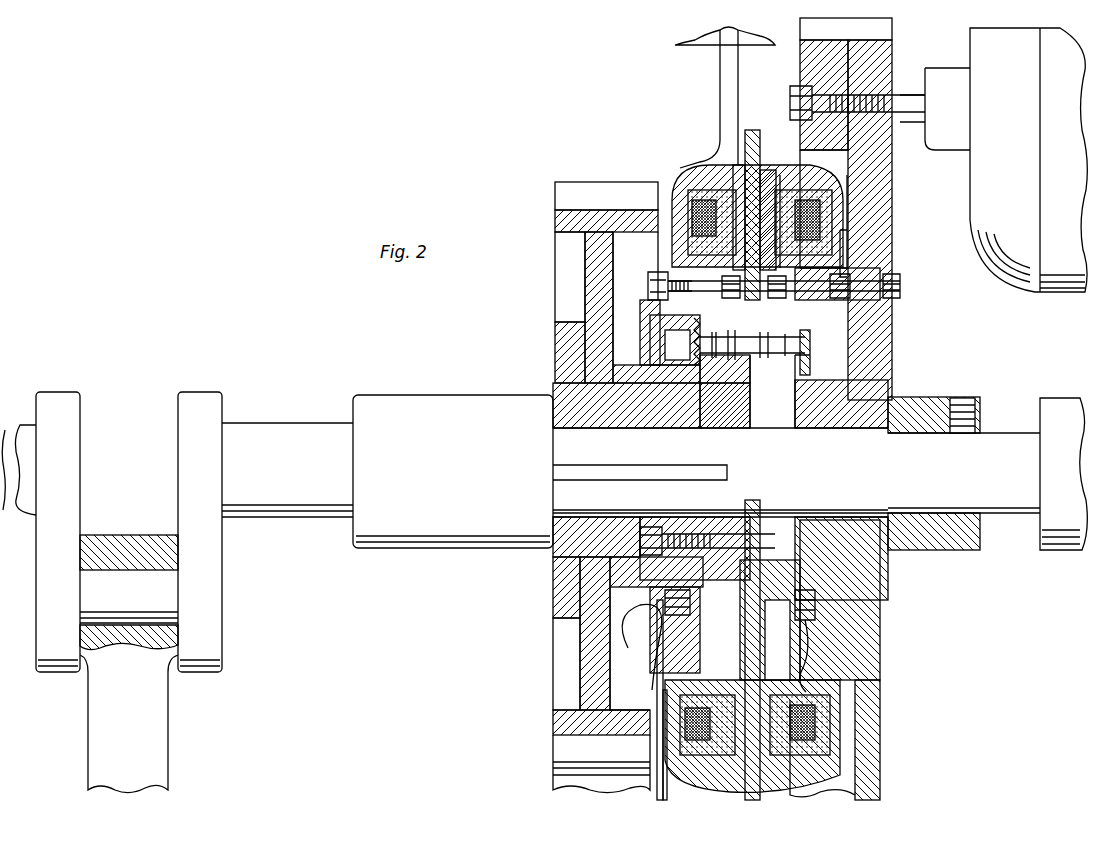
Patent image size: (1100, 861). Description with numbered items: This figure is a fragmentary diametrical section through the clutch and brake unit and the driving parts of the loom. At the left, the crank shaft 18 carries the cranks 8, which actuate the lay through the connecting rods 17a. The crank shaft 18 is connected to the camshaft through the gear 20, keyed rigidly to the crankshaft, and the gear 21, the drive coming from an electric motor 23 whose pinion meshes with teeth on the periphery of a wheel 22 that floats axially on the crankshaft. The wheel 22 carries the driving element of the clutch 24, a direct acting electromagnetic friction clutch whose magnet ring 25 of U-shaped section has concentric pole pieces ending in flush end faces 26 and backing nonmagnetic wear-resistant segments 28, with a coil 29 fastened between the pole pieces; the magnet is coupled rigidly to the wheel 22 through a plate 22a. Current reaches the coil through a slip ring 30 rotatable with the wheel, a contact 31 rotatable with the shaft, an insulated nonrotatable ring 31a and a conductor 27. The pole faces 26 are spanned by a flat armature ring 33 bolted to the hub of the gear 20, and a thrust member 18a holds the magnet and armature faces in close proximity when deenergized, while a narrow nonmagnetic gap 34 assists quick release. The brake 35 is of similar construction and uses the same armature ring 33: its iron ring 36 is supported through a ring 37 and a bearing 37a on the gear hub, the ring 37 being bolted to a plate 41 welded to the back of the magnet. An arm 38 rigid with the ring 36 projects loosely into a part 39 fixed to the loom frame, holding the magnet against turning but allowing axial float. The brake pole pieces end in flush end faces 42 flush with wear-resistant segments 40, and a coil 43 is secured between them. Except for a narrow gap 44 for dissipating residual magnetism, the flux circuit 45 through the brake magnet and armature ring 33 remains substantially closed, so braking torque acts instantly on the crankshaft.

The cranks 8 is at (215, 603).
The connecting rods 17a is at (168, 748).
The crank shaft 18 is at (300, 438).
The thrust member 18a is at (975, 405).
The gear 20 is at (565, 185).
The gear 21 is at (553, 778).
The wheel 22 is at (880, 215).
The plate 22a is at (885, 236).
The electric motor 23 is at (1010, 290).
The clutch 24 is at (840, 160).
The magnet ring 25 is at (838, 185).
The end faces 26 is at (760, 170).
The conductor 27 is at (640, 640).
The nonmagnetic wear-resistant segments 28 is at (776, 180).
The coil 29 is at (845, 215).
The slip ring 30 is at (795, 335).
The contact 31 is at (775, 365).
The insulated nonrotatable ring 31a is at (700, 335).
The armature ring 33 is at (740, 165).
The nonmagnetic gap 34 is at (810, 295).
The brake 35 is at (672, 182).
The iron ring 36 is at (695, 185).
The ring 37 is at (640, 325).
The bearing 37a is at (660, 388).
The arm 38 is at (720, 78).
The part 39 is at (695, 45).
The nonmagnetic wear-resistant segments 40 is at (700, 745).
The plate 41 is at (648, 258).
The end faces 42 is at (752, 780).
The coil 43 is at (667, 760).
The gap 44 is at (720, 685).
The flux circuit 45 is at (657, 700).